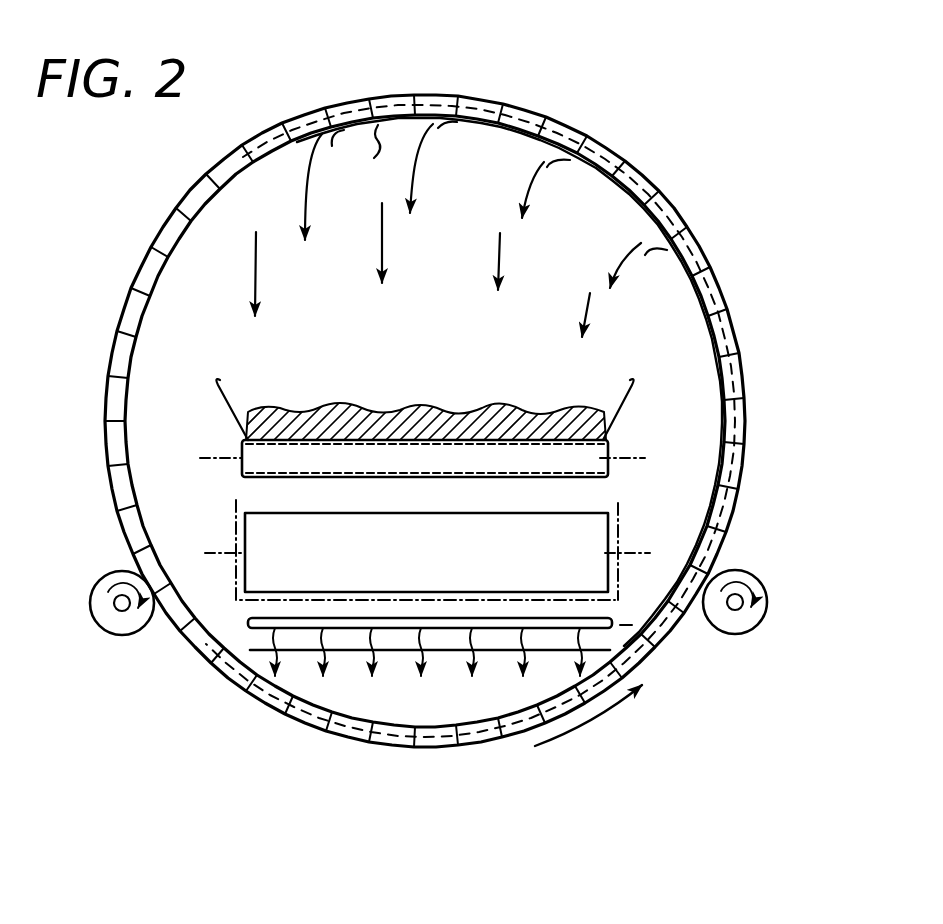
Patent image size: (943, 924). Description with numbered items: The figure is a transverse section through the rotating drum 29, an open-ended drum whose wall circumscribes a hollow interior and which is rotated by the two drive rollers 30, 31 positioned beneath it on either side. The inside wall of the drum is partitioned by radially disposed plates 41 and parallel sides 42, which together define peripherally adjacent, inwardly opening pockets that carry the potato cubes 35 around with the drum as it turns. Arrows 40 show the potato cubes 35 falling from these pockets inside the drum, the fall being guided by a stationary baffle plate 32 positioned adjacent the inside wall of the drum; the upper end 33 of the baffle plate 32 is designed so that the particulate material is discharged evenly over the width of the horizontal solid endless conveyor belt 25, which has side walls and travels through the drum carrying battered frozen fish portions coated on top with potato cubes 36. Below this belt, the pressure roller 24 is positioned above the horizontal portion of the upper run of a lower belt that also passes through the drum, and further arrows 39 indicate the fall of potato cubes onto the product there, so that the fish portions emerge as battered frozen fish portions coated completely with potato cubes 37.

The pressure roller 24 is at (585, 534).
The horizontal solid endless conveyor belt 25 is at (590, 450).
The rotating drum 29 is at (712, 285).
The drive roller 30 is at (733, 640).
The drive roller 31 is at (122, 640).
The stationary baffle plate 32 is at (703, 326).
The upper end of baffle plate 33 is at (461, 229).
The potato cubes 35 is at (552, 124).
The battered frozen fish portions coated on top with potato cubes 36 is at (420, 415).
The battered frozen fish portions coated completely with potato cubes 37 is at (602, 626).
The arrow indicating fall of potato cubes 39 is at (397, 678).
The arrow indicating fall of potato cubes 40 is at (539, 209).
The radially disposed plates 41 is at (158, 252).
The parallel sides 42 is at (108, 462).